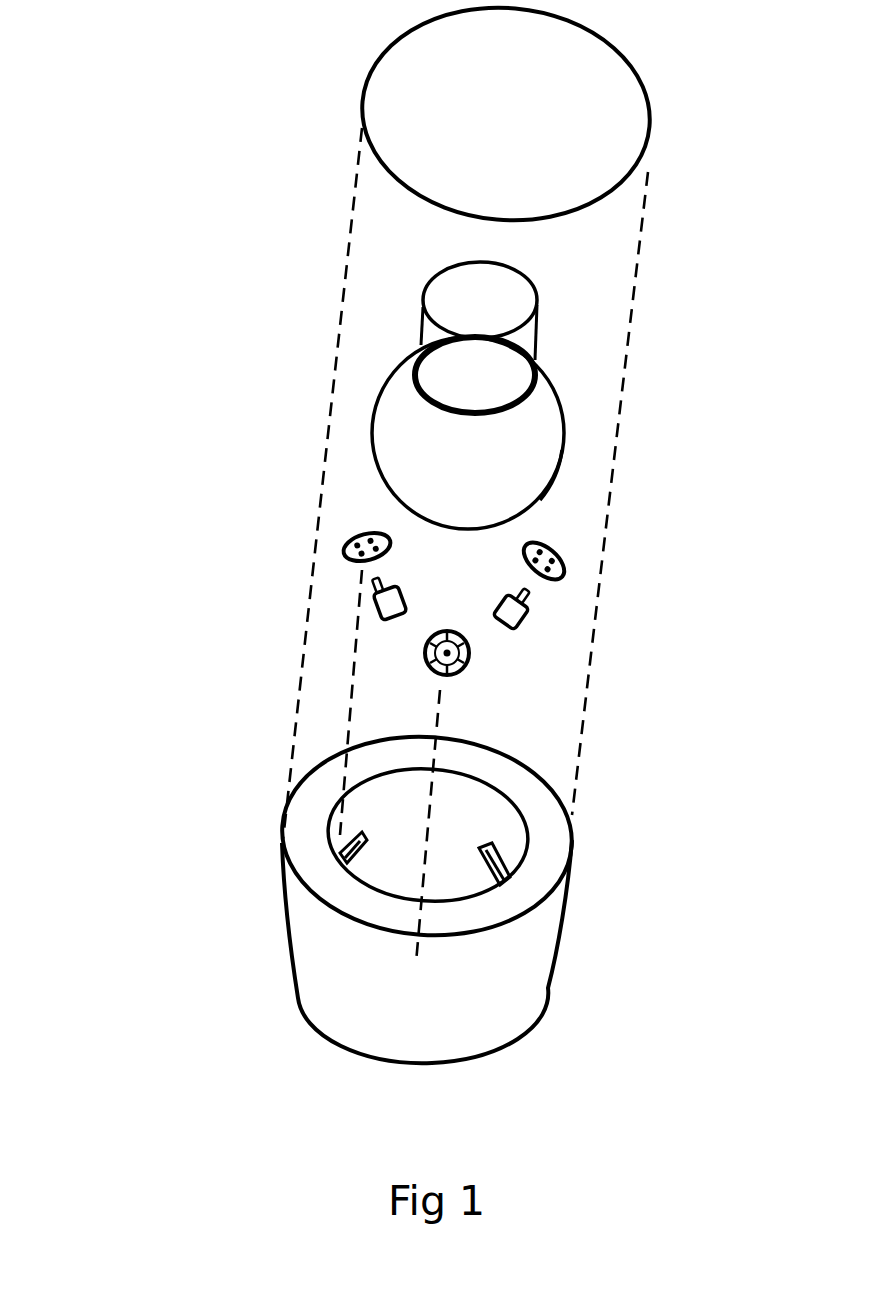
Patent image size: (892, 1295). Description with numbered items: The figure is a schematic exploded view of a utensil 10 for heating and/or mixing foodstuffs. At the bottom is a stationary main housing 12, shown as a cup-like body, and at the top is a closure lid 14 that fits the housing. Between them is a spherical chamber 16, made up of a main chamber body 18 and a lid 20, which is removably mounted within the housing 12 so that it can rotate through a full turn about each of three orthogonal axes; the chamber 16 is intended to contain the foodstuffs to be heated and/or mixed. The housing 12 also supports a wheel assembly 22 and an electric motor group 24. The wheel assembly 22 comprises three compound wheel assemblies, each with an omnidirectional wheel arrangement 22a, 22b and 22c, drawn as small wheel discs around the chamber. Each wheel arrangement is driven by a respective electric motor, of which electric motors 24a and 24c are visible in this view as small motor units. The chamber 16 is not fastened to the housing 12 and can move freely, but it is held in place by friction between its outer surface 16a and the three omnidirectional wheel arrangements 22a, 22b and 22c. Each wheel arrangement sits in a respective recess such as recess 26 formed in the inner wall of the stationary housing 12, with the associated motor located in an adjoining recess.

The utensil 10 is at (160, 467).
The stationary main housing 12 is at (513, 953).
The closure lid 14 is at (598, 92).
The spherical chamber 16 is at (566, 387).
The outer surface 16a is at (560, 491).
The main chamber body 18 is at (535, 420).
The lid 20 is at (505, 303).
The wheel assembly 22 is at (420, 608).
The omnidirectional wheel arrangement 22a is at (560, 552).
The omnidirectional wheel arrangement 22b is at (470, 658).
The omnidirectional wheel arrangement 22c is at (357, 543).
The electric motor group 24 is at (454, 655).
The electric motor 24a is at (530, 608).
The electric motor 24c is at (378, 612).
The recess 26 is at (487, 838).